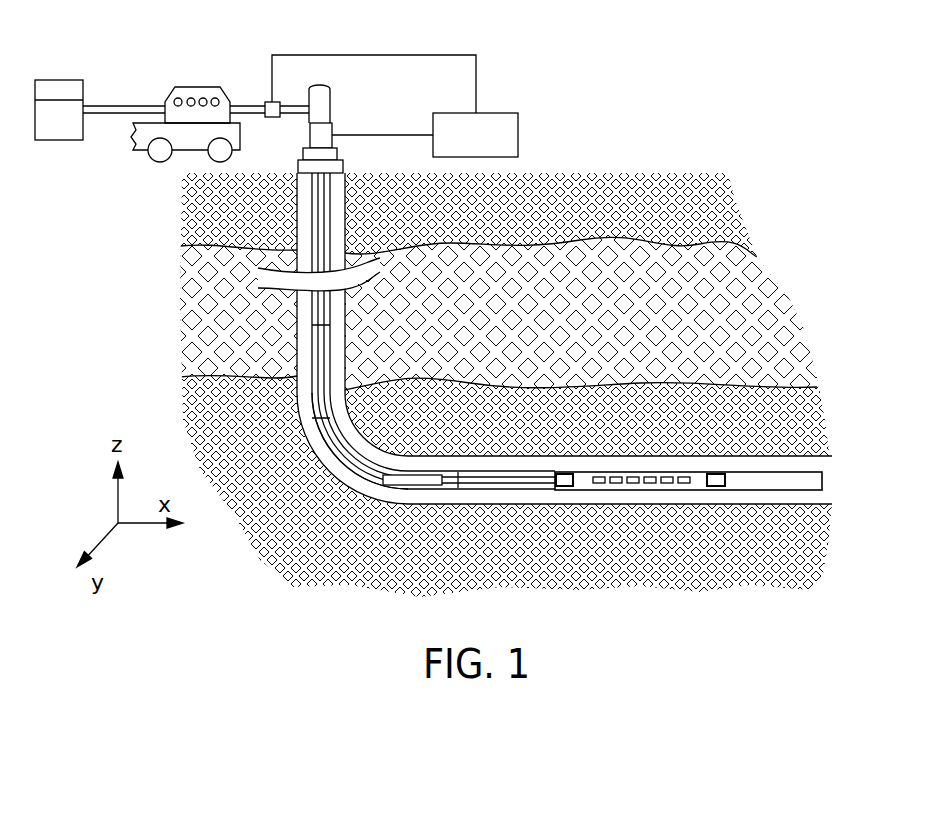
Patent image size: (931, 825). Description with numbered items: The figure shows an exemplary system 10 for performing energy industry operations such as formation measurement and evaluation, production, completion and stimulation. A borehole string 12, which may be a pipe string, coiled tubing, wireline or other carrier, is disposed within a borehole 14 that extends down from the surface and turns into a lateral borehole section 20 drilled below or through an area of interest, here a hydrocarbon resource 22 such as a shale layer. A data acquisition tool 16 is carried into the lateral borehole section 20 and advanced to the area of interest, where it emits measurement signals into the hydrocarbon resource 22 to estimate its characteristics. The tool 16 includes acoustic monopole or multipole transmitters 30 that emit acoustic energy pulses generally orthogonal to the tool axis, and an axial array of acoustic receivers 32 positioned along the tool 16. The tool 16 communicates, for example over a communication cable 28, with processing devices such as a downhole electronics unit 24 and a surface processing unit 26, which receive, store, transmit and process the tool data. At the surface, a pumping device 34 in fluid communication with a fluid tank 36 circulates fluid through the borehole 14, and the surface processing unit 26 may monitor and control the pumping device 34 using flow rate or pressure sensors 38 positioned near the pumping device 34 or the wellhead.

The system 10 is at (155, 40).
The borehole string 12 is at (330, 223).
The borehole 14 is at (302, 325).
The data acquisition tool 16 is at (610, 490).
The lateral borehole section 20 is at (803, 462).
The hydrocarbon resource 22 is at (820, 415).
The downhole electronics unit 24 is at (428, 474).
The surface processing unit 26 is at (489, 148).
The communication cable 28 is at (333, 452).
The transmitters 30 is at (563, 473).
The acoustic receivers 32 is at (666, 476).
The pumping device 34 is at (222, 92).
The fluid tank 36 is at (63, 140).
The flow rate and/or pressure sensors 38 is at (310, 135).